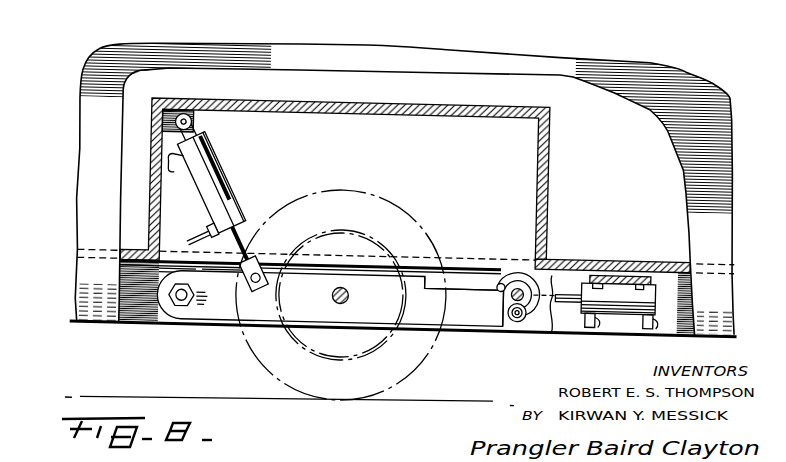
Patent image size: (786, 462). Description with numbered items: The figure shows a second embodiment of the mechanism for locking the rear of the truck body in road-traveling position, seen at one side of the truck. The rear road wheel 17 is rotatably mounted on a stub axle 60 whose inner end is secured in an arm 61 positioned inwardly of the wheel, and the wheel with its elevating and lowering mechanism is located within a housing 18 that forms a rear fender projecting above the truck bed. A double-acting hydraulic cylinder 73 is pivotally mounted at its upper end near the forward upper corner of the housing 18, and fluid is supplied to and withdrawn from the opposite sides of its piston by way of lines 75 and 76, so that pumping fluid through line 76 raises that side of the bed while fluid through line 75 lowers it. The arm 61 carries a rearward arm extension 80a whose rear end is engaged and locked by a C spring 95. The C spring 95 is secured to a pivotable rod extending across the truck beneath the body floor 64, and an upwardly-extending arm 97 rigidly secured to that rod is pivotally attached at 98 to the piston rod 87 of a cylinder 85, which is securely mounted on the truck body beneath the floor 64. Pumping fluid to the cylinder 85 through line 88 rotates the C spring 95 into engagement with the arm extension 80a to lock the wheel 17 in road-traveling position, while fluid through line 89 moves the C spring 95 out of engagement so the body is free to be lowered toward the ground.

The wheel housing 18 is at (502, 99).
The body floor 64 is at (651, 250).
The arm 61 is at (212, 319).
The arm extension 80a is at (482, 310).
The cylinder 73 is at (216, 153).
The line 76 is at (176, 172).
The line 75 is at (206, 228).
The C spring 95 is at (514, 264).
The pivot connection 98 is at (529, 284).
The arm 97 is at (531, 310).
The piston rod 87 is at (558, 304).
The cylinder 85 is at (633, 304).
The line 89 is at (595, 318).
The line 88 is at (656, 317).
The stub axle 60 is at (345, 299).
The road wheel 17 is at (429, 355).